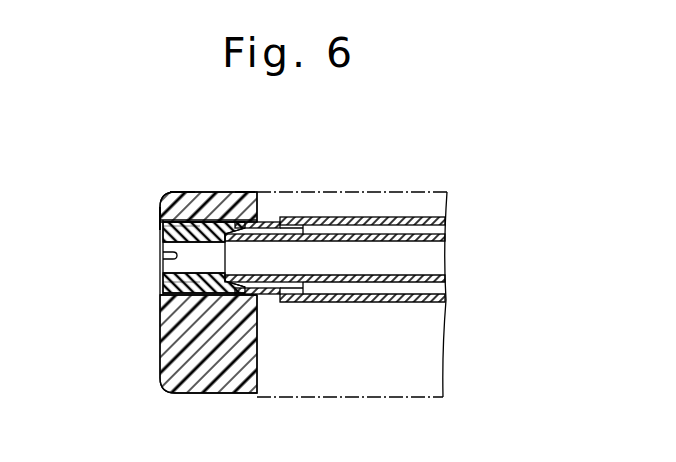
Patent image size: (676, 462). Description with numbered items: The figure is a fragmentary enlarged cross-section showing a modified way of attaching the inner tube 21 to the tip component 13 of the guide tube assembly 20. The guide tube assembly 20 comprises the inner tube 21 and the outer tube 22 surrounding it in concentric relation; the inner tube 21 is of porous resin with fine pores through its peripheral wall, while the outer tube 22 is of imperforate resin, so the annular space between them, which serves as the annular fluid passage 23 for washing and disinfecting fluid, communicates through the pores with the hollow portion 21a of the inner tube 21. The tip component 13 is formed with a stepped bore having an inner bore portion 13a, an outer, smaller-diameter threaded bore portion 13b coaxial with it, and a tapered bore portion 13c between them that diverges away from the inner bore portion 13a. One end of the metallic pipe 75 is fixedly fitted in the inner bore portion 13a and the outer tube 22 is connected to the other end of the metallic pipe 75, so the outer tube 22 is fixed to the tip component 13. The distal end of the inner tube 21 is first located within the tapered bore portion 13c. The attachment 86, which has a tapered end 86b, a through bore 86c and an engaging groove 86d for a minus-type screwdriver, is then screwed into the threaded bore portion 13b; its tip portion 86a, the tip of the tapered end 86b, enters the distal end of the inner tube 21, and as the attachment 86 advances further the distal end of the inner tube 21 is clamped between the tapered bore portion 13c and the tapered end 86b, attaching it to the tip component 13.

The tip component 13 is at (207, 192).
The inner bore portion 13a is at (246, 192).
The threaded bore portion 13b is at (161, 218).
The tapered bore portion 13c is at (187, 192).
The guide tube assembly 20 is at (394, 210).
The inner tube 21 is at (333, 282).
The hollow portion 21a is at (370, 269).
The outer tube 22 is at (378, 302).
The annular fluid passage 23 is at (418, 286).
The metallic pipe 75 is at (276, 222).
The attachment 86 is at (163, 270).
The collet portion 86a is at (173, 300).
The tapered end 86b is at (207, 297).
The through bore 86c is at (163, 232).
The engaging groove 86d is at (163, 255).